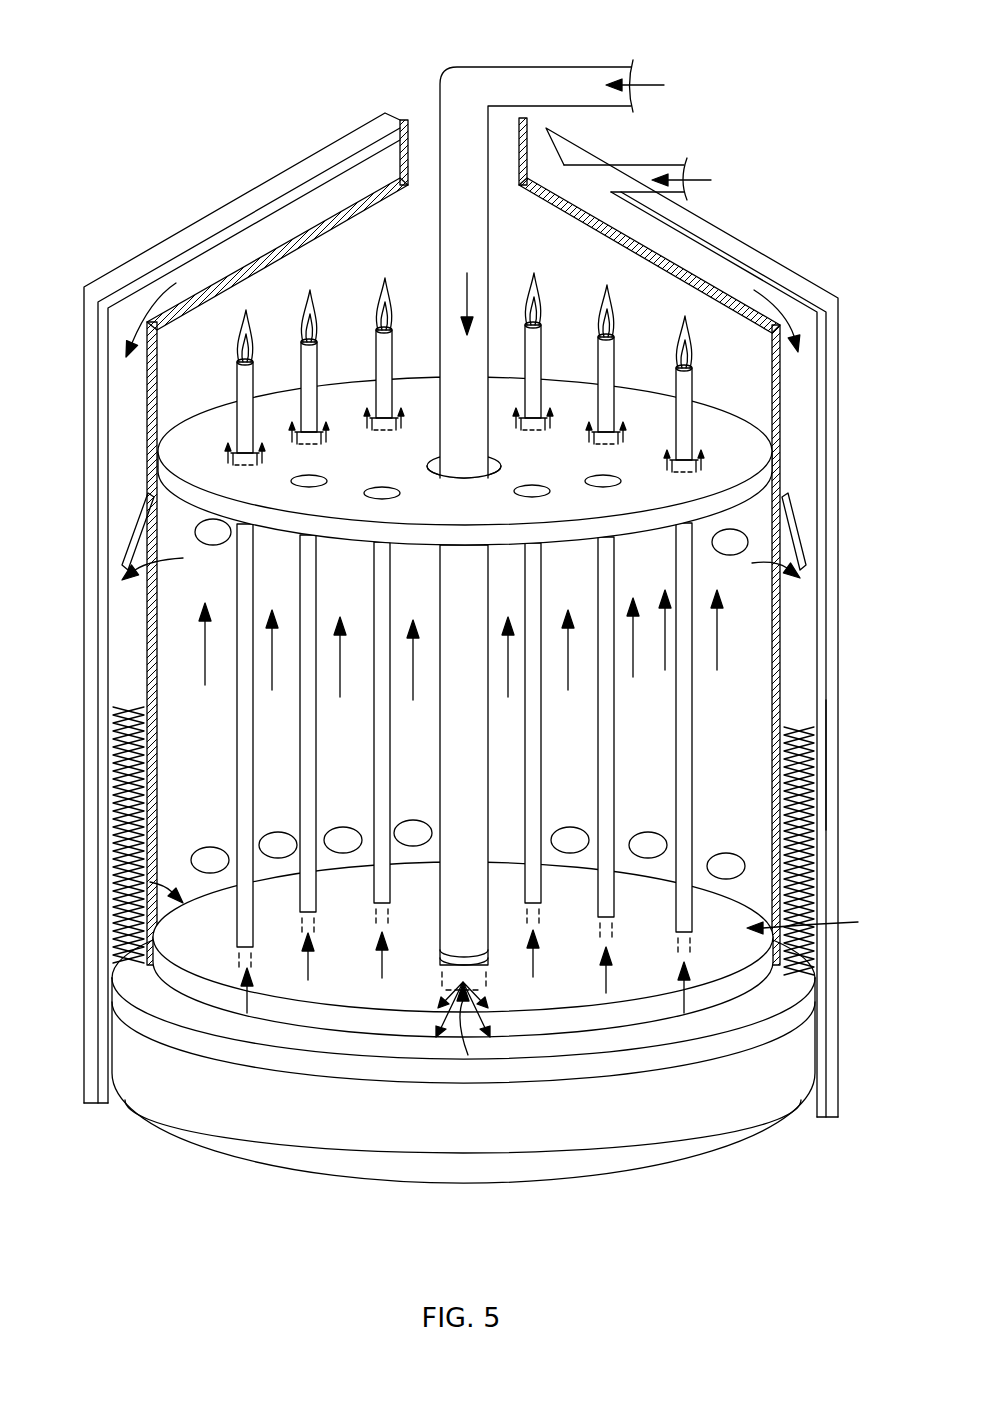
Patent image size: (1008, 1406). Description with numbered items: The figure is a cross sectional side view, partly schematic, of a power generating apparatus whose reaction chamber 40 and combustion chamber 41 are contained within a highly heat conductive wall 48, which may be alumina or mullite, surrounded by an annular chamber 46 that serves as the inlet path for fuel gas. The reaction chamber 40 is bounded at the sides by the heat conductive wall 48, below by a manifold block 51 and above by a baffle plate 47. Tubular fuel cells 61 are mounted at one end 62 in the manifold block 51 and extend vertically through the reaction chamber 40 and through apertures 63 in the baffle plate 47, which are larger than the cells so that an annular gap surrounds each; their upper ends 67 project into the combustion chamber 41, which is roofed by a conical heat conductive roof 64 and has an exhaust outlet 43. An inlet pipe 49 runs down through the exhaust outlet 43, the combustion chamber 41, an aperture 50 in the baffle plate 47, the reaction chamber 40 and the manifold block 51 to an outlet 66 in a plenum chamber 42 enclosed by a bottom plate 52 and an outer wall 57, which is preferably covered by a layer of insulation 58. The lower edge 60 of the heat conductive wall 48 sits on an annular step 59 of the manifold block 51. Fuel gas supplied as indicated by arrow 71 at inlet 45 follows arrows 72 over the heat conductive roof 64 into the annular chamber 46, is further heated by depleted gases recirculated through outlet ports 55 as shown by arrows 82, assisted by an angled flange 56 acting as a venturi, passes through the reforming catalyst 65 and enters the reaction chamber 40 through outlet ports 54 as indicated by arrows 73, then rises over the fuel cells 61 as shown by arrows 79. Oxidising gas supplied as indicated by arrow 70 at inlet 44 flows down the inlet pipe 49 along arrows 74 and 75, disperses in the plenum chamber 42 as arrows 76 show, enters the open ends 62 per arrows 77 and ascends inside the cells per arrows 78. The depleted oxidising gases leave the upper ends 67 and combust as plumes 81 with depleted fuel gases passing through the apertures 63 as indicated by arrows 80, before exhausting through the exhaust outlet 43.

The reaction chamber 40 is at (555, 727).
The combustion chamber 41 is at (499, 251).
The plenum chamber 42 is at (448, 1137).
The exhaust outlet 43 is at (400, 157).
The inlet 44 is at (540, 67).
The inlet 45 is at (640, 165).
The annular chamber 46 is at (802, 467).
The baffle plate 47 is at (723, 427).
The heat conductive wall 48 is at (780, 710).
The inlet pipe 49 is at (440, 256).
The aperture 50 is at (427, 467).
The manifold block 51 is at (463, 949).
The bottom plate 52 is at (604, 1183).
The outlet ports 54 is at (821, 920).
The outlet ports 55 is at (752, 563).
The angled flange 56 is at (798, 528).
The outer wall 57 is at (793, 753).
The layer of insulation 58 is at (833, 768).
The annular step 59 is at (767, 1003).
The lower edge 60 is at (790, 981).
The fuel cells 61 is at (617, 882).
The end 62 is at (316, 925).
The apertures 63 is at (673, 477).
The heat conductive roof 64 is at (247, 267).
The reforming catalyst 65 is at (813, 787).
The outlet 66 is at (486, 980).
The ends 67 is at (613, 358).
The arrow 70 is at (648, 82).
The arrow 71 is at (701, 180).
The arrows 72 is at (786, 300).
The arrows 73 is at (783, 897).
The arrows 74 is at (463, 291).
The arrows 75 is at (480, 802).
The arrows 76 is at (468, 1034).
The arrows 77 is at (313, 977).
The arrows 78 is at (313, 717).
The arrows 79 is at (665, 660).
The arrows 80 is at (626, 419).
The plumes 81 is at (598, 308).
The arrows 82 is at (802, 583).